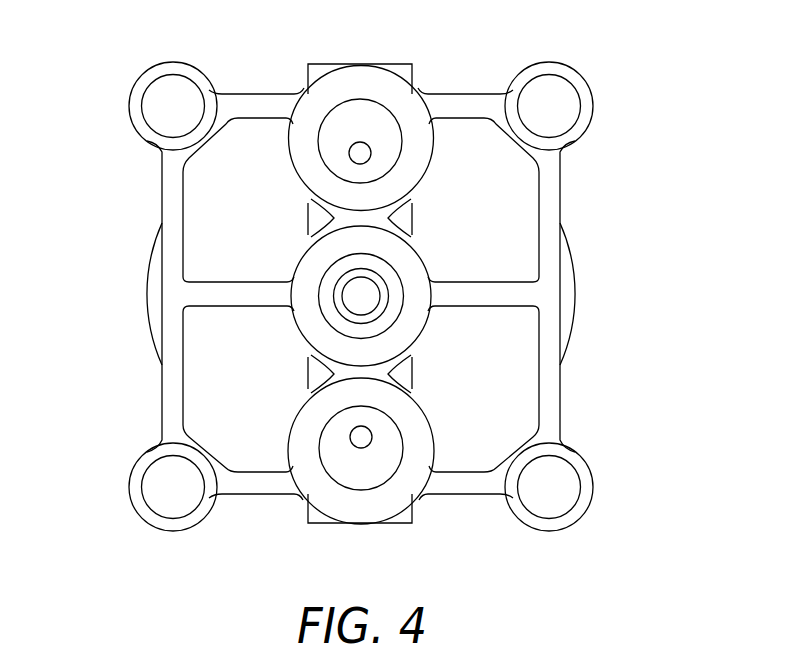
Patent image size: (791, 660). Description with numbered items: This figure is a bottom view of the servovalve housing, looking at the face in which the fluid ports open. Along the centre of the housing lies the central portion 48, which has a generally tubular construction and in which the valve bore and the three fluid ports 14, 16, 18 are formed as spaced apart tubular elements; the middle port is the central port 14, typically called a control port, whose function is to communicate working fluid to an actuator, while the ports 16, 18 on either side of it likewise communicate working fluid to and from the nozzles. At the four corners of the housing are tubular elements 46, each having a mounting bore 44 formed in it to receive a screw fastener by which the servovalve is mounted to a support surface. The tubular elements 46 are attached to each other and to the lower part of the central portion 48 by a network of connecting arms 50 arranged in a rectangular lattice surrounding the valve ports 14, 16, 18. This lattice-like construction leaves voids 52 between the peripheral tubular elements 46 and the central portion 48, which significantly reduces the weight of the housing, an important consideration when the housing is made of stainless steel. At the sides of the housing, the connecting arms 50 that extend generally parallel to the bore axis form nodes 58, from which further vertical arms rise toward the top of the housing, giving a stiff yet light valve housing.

The central port 14 is at (300, 268).
The fluid port 16 is at (358, 503).
The fluid port 18 is at (348, 88).
The mounting bore 44 is at (170, 88).
The tubular element 46 is at (130, 106).
The central portion 48 is at (412, 70).
The connecting arm 50 is at (254, 104).
The void 52 is at (233, 204).
The node 58 is at (170, 294).